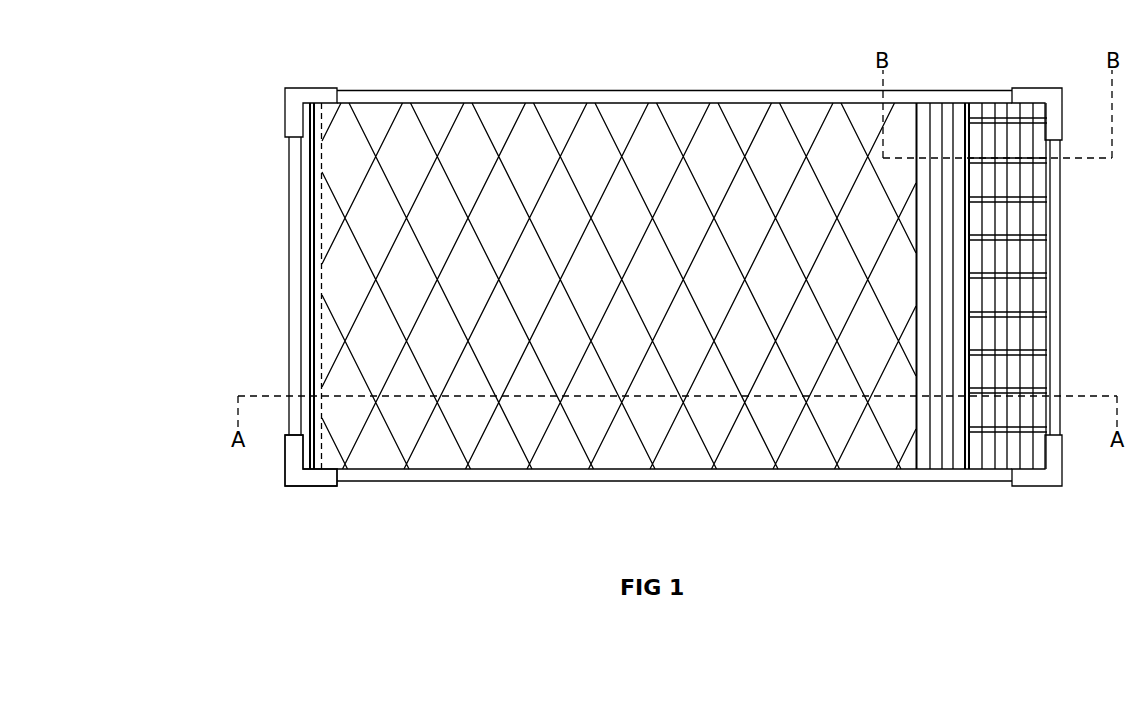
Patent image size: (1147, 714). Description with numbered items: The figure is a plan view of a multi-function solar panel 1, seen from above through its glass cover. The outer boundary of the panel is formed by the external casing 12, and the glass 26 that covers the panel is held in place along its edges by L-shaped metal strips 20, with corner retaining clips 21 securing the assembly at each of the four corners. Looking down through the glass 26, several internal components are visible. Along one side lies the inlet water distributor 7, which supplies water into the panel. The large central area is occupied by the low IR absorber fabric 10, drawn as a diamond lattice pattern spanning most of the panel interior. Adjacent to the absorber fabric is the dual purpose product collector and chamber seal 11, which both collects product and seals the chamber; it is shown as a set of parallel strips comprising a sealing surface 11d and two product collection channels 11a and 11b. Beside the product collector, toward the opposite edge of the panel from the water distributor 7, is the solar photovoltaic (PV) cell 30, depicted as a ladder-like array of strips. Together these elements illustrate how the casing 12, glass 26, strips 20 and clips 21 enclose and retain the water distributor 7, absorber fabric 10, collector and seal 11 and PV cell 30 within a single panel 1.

The multi-function solar panel 1 is at (1004, 79).
The inlet water distributor 7 is at (306, 200).
The low IR absorber fabric 10 is at (486, 420).
The dual purpose product collector and chamber seal 11 is at (964, 343).
The product collection channel 11a is at (916, 470).
The product collection channel 11b is at (944, 471).
The sealing surface 11d is at (966, 471).
The external casing 12 is at (388, 486).
The L-shaped metal strip 20 is at (290, 323).
The corner retaining clip 21 is at (283, 470).
The glass 26 is at (363, 109).
The solar photovoltaic (PV) cell 30 is at (1038, 217).